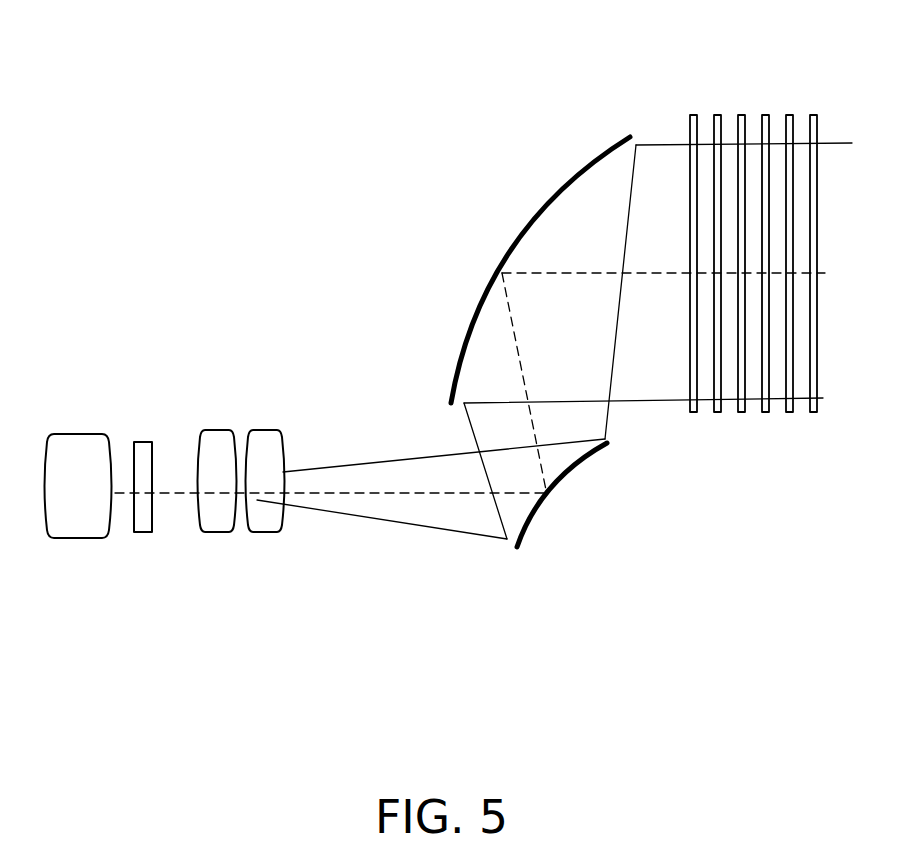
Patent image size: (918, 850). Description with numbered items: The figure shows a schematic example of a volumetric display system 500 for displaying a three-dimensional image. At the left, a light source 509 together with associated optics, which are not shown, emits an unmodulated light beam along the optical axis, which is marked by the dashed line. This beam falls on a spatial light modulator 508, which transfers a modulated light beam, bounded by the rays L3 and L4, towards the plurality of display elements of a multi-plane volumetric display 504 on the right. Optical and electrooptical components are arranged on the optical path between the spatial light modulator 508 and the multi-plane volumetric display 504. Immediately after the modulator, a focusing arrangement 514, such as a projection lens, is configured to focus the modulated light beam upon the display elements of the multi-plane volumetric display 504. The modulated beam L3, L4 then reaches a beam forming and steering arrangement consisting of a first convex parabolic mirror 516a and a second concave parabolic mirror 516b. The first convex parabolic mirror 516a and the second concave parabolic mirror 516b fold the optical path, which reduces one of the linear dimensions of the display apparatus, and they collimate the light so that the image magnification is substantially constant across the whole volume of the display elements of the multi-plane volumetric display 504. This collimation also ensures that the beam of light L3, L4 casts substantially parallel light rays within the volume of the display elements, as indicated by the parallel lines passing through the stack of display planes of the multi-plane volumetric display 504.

The volumetric display system 500 is at (130, 86).
The multi-plane volumetric display 504 is at (827, 98).
The spatial light modulator 508 is at (139, 452).
The light source 509 is at (67, 447).
The focusing arrangement 514 is at (209, 429).
The first convex parabolic mirror 516a is at (548, 487).
The second concave parabolic mirror 516b is at (493, 282).
The modulated light beam ray L3 is at (395, 448).
The modulated light beam ray L4 is at (380, 522).